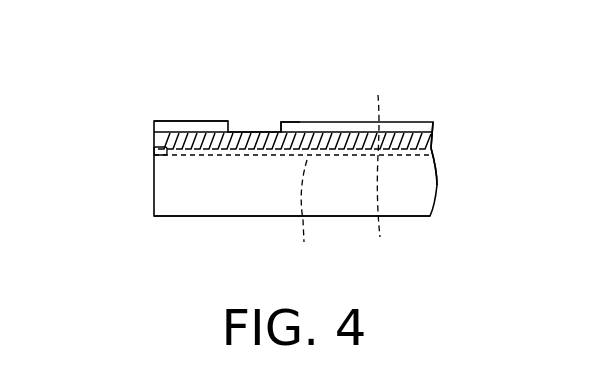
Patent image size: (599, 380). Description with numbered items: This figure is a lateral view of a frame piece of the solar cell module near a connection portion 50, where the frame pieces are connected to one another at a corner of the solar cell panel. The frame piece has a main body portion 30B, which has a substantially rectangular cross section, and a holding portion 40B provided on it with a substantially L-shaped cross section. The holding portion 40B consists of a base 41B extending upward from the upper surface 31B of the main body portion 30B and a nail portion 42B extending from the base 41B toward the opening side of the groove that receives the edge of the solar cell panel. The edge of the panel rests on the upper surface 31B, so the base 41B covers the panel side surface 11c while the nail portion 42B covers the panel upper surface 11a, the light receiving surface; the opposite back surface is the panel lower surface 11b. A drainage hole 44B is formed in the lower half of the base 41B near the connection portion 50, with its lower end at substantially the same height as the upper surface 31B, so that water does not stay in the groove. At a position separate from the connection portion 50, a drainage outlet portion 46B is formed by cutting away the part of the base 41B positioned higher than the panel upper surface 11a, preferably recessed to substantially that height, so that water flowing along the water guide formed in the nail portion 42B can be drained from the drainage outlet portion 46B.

The connection portion 50 is at (154, 198).
The holding portion 40B is at (235, 62).
The base 41B is at (189, 132).
The nail portion 42B is at (222, 121).
The drainage outlet portion 46B is at (272, 130).
The drainage hole 44B is at (154, 152).
The panel upper surface 11a is at (382, 114).
The panel lower surface 11b is at (374, 205).
The panel side surface 11c is at (435, 143).
The main body portion 30B is at (254, 200).
The upper surface 31B is at (305, 208).